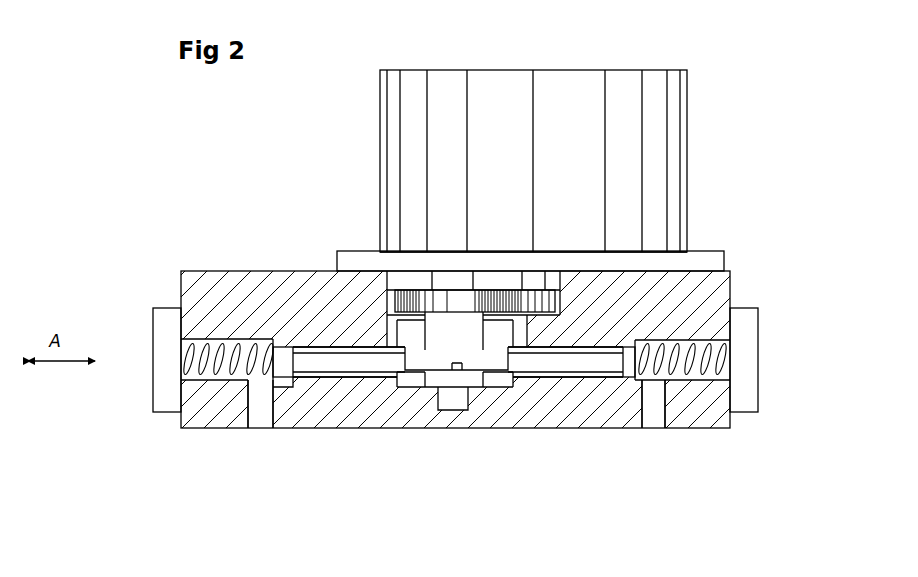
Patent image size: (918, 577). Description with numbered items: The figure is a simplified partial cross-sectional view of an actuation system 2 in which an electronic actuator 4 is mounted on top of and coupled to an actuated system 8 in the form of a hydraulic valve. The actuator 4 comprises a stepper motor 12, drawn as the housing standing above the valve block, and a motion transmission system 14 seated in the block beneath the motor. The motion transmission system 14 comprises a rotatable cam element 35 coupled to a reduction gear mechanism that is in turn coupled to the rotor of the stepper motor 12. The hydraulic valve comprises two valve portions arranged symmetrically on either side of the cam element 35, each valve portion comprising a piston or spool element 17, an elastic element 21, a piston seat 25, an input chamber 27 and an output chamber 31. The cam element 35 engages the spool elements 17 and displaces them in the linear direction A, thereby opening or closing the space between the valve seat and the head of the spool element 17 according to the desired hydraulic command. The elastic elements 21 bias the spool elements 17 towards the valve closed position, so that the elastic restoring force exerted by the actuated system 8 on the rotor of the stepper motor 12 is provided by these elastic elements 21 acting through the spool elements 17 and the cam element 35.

The actuation system 2 is at (138, 158).
The electronic actuator 4 is at (773, 170).
The actuated system 8 is at (553, 278).
The stepper motor 12 is at (590, 174).
The motion transmission system 14 is at (450, 296).
The spool element 17 is at (368, 357).
The elastic element 21 is at (203, 382).
The piston seat 25 is at (293, 345).
The input chamber 27 is at (258, 405).
The output chamber 31 is at (323, 380).
The cam element 35 is at (417, 353).